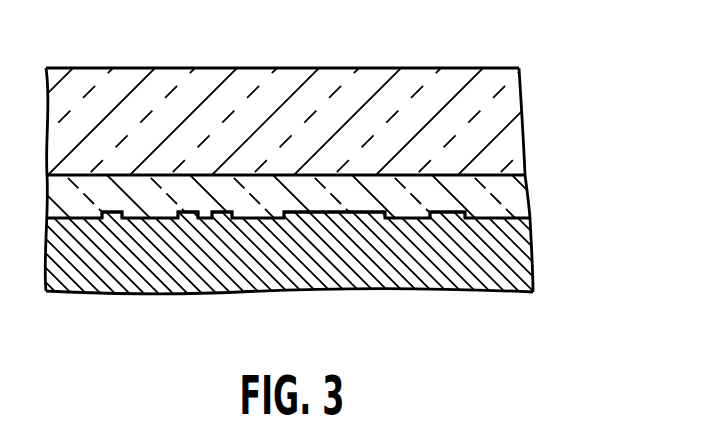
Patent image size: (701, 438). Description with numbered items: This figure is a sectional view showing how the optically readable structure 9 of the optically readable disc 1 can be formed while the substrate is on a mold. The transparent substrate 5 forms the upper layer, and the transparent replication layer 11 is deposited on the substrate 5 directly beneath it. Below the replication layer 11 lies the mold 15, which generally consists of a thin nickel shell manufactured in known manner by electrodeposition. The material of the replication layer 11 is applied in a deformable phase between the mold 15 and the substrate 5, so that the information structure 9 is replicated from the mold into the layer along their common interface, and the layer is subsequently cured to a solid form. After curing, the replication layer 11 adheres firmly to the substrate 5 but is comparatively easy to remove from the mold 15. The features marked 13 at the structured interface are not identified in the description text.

The optically readable disc 1 is at (412, 67).
The substrate 5 is at (512, 108).
The optical structure 9 is at (184, 212).
The replication layer 11 is at (516, 197).
The raised structures (pits/lands) 13 is at (112, 212).
The mold 15 is at (513, 250).